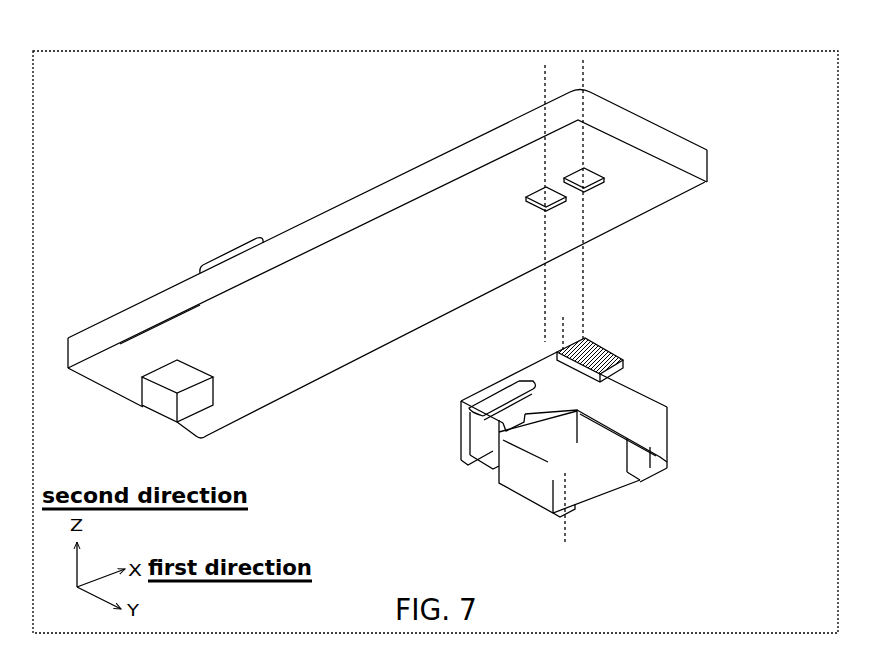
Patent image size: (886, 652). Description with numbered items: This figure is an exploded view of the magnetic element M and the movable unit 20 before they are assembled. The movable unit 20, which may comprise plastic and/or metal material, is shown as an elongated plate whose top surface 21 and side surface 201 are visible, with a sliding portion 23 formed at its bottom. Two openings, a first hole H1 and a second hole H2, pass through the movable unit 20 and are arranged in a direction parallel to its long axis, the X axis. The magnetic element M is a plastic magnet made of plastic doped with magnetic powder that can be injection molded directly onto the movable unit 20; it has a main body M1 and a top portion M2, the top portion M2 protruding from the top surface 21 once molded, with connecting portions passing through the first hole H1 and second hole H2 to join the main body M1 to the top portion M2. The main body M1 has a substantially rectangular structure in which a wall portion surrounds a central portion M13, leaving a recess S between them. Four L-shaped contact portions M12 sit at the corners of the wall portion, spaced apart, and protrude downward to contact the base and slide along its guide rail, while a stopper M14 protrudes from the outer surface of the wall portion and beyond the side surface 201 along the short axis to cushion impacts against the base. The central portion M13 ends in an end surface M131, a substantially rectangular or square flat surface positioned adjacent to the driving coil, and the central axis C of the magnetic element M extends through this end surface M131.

The movable unit 20 is at (384, 183).
The top surface 21 is at (312, 218).
The side surface 201 is at (142, 317).
The sliding portion 23 is at (177, 425).
The first hole H1 is at (530, 190).
The second hole H2 is at (597, 173).
The magnetic element M is at (616, 411).
The main body M1 is at (458, 408).
The top portion M2 is at (597, 358).
The contact portion M12 is at (490, 466).
The central portion M13 is at (550, 503).
The end surface M131 is at (525, 490).
The stopper M14 is at (505, 422).
The recess S is at (500, 390).
The central axis C is at (572, 523).